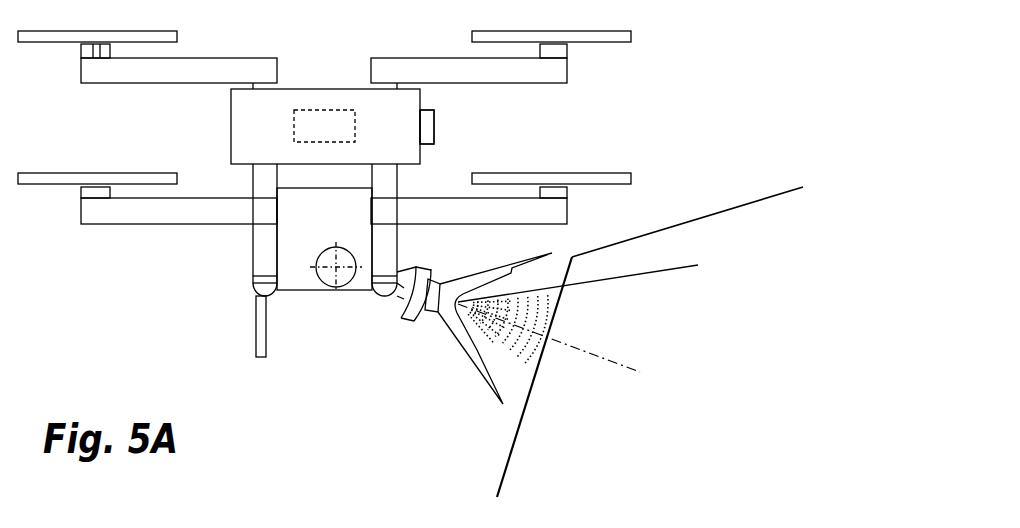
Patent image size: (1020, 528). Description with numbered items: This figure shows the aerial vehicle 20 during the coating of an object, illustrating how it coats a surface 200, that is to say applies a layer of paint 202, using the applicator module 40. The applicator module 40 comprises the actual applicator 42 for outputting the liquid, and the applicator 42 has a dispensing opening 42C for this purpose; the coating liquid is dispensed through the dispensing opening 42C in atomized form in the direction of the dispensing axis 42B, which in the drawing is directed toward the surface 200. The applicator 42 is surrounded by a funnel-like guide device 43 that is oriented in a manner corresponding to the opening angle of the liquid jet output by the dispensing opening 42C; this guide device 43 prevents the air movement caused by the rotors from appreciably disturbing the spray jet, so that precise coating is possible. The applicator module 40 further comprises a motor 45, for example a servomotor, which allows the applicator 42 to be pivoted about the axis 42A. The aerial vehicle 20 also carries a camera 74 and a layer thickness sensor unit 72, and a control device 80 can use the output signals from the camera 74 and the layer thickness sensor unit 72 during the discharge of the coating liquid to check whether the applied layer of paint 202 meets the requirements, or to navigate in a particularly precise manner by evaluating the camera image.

The aerial vehicle 20 is at (654, 106).
The applicator module 40 is at (303, 178).
The applicator 42 is at (437, 336).
The axis 42A is at (335, 284).
The dispensing axis 42B is at (613, 365).
The dispensing opening 42C is at (603, 278).
The guide device 43 is at (523, 262).
The motor 45 is at (312, 268).
The layer thickness sensor unit 72 is at (430, 133).
The camera 74 is at (427, 127).
The control device 80 is at (318, 117).
The surface 200 is at (723, 212).
The layer of paint 202 is at (503, 472).